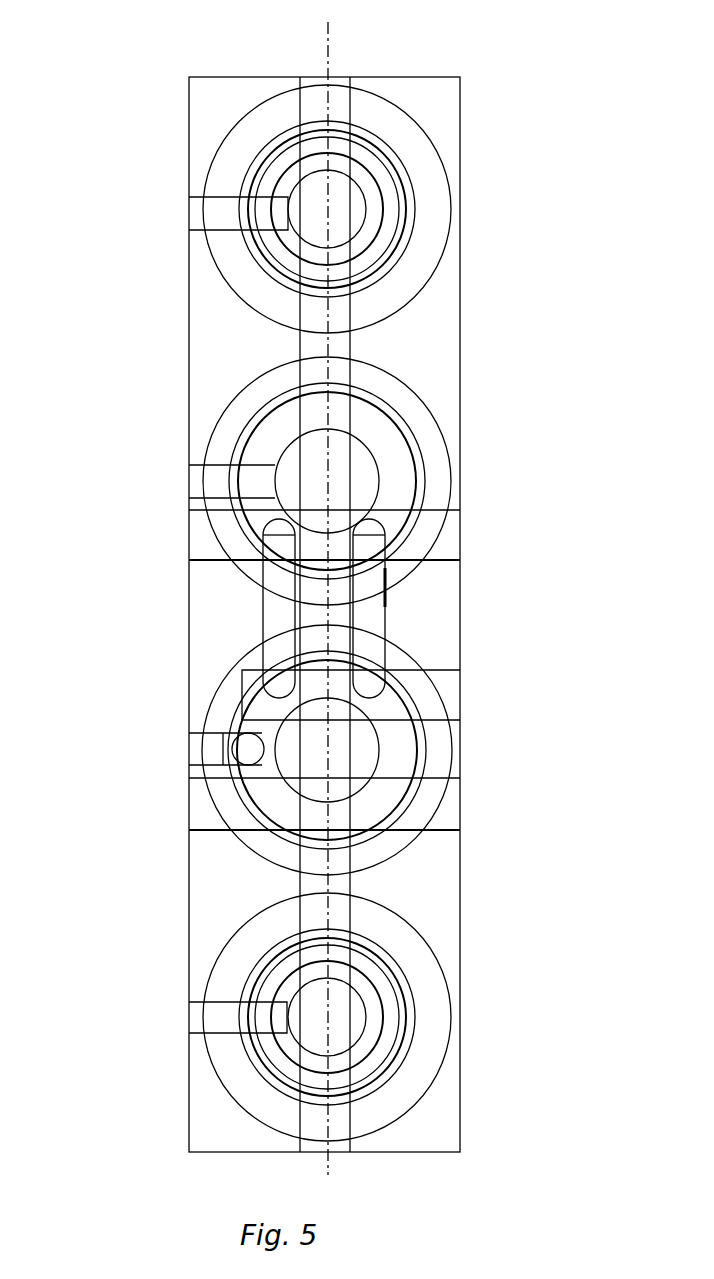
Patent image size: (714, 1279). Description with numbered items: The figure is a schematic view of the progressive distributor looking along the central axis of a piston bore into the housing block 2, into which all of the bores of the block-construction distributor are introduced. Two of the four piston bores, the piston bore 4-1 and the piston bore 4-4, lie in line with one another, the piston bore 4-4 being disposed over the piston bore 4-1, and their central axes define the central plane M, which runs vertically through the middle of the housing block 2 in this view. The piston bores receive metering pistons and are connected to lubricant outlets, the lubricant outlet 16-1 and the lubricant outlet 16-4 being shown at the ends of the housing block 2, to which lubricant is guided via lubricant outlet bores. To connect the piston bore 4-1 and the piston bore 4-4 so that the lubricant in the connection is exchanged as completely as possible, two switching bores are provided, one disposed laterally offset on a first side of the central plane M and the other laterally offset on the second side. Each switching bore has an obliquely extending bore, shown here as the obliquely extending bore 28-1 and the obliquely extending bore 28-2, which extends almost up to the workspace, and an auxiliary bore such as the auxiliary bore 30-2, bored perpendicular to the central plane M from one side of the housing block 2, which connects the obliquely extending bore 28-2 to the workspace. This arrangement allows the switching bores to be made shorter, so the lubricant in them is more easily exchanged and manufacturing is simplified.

The housing block 2 is at (453, 90).
The central plane M is at (329, 50).
The lubricant outlet 16-1 is at (313, 205).
The piston bore 4-1 is at (283, 468).
The obliquely extending bore 28-2 is at (270, 622).
The obliquely extending bore 28-1 is at (375, 621).
The auxiliary bore 30-2 is at (453, 687).
The piston bore 4-4 is at (318, 757).
The lubricant outlet 16-4 is at (303, 1027).